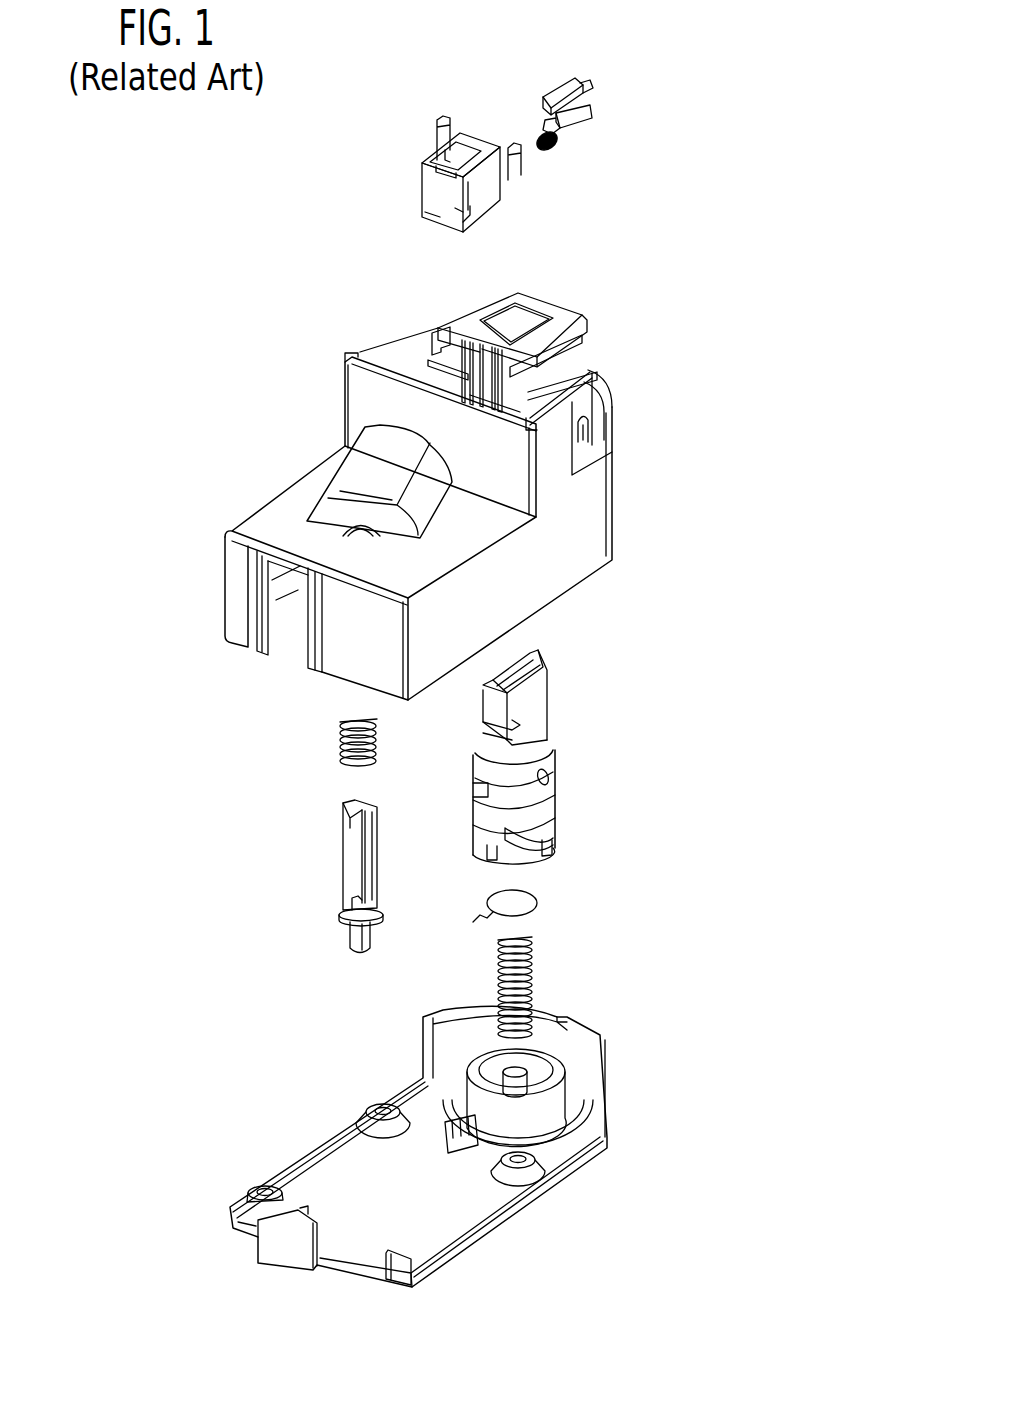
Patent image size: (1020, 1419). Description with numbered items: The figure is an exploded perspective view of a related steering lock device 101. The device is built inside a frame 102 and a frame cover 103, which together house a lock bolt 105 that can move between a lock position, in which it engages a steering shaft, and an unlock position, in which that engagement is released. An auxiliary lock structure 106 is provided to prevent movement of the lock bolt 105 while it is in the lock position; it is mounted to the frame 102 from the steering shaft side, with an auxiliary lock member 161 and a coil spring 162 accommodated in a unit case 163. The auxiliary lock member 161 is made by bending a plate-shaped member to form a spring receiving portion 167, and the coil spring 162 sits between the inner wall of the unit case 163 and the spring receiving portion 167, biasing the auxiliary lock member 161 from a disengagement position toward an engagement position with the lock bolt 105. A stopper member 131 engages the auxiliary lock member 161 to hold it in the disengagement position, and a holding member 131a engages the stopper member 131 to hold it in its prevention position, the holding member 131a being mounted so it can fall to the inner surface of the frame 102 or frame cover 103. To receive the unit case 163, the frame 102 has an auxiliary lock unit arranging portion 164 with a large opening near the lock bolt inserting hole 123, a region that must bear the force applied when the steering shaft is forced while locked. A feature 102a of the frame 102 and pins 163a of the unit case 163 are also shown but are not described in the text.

The steering lock device 101 is at (700, 40).
The frame 102 is at (258, 480).
The hook portion of housing 102a is at (442, 317).
The frame cover 103 is at (303, 1152).
The lock bolt 105 is at (550, 683).
The auxiliary lock structure 106 is at (427, 68).
The lock bolt inserting hole 123 is at (500, 333).
The stopper member 131 is at (350, 852).
The holding member 131a is at (542, 893).
The auxiliary lock member 161 is at (562, 78).
The coil spring 162 is at (552, 148).
The unit case 163 is at (420, 177).
The pin of terminal holder 163a is at (438, 130).
The auxiliary lock unit arranging portion 164 is at (467, 377).
The spring receiving portion 167 is at (592, 113).